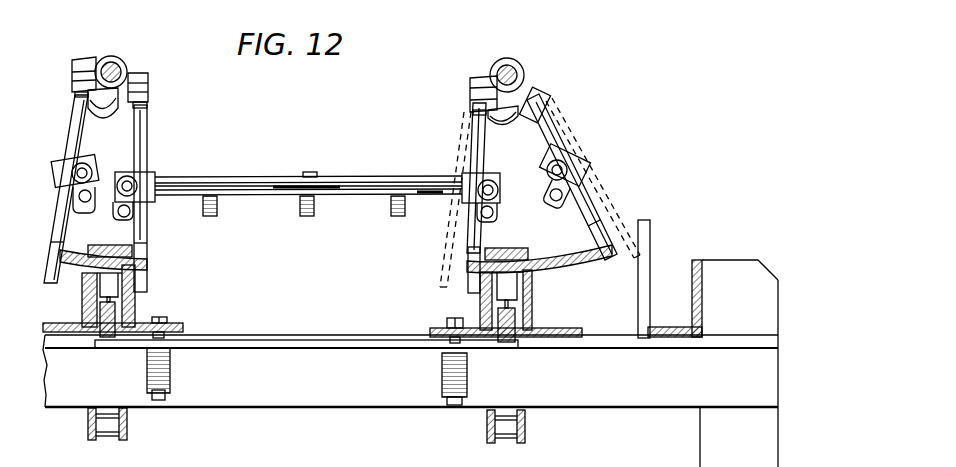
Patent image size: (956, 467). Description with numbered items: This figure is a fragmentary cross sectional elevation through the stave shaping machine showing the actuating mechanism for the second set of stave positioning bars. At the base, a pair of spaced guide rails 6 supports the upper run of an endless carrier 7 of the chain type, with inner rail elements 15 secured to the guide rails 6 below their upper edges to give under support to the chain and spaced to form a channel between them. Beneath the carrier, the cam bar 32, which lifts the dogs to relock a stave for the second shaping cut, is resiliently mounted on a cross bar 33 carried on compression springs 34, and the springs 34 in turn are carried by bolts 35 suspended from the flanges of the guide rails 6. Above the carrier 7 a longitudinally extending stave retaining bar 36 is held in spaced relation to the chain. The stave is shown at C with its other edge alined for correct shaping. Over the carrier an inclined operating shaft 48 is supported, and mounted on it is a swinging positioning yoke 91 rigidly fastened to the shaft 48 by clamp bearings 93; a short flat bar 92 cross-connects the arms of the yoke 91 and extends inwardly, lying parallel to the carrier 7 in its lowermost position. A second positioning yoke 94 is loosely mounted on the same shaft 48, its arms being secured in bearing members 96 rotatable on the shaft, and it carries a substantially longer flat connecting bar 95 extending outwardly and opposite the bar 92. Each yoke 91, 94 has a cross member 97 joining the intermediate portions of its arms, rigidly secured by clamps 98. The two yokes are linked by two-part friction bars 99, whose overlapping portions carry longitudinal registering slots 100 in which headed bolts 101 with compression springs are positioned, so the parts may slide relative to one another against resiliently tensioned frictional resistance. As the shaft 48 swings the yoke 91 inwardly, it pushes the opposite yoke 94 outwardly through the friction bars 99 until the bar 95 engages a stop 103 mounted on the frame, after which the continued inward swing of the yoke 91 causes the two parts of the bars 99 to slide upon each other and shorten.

The operating shaft 48 is at (118, 58).
The second swinging positioning yoke 94 is at (72, 130).
The swinging positioning yoke 91 is at (147, 140).
The two-part friction bar 99 is at (170, 175).
The headed pin or bolt 101 is at (213, 213).
The longitudinal registering slot 100 is at (237, 195).
The clamp 98 is at (460, 210).
The cross member 97 is at (478, 213).
The clamp bearing 93 is at (478, 97).
The bearing member 96 is at (533, 76).
The flat connecting bar 95 is at (603, 233).
The stave retaining bar 36 is at (517, 248).
The short flat bar 92 is at (470, 280).
The endless carrier 7 is at (82, 290).
The guide rail 6 is at (88, 313).
The cam bar 32 is at (133, 310).
The inner rail element 15 is at (90, 327).
The bolt 35 is at (157, 338).
The compression spring 34 is at (170, 372).
The cross bar 33 is at (331, 349).
The stop 103 is at (650, 272).
The stave position C is at (577, 260).